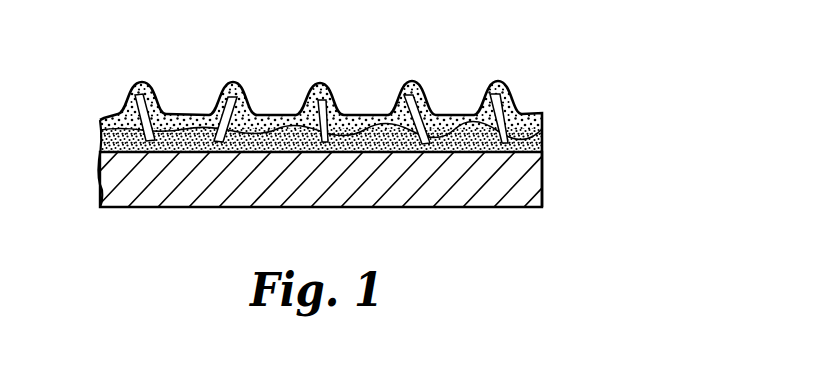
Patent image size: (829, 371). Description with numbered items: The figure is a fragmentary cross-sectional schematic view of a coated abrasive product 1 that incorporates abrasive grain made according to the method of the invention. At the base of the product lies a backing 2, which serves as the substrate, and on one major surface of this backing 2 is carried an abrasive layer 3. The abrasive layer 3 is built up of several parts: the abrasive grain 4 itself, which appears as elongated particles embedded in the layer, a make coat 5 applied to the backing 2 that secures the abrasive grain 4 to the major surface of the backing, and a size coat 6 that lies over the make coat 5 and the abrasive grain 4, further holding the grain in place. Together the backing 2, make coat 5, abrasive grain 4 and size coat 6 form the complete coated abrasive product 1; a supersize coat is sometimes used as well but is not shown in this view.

The coated abrasive product 1 is at (423, 55).
The backing 2 is at (190, 200).
The abrasive layer 3 is at (553, 131).
The abrasive grain 4 is at (393, 100).
The make coat 5 is at (97, 138).
The size coat 6 is at (123, 112).